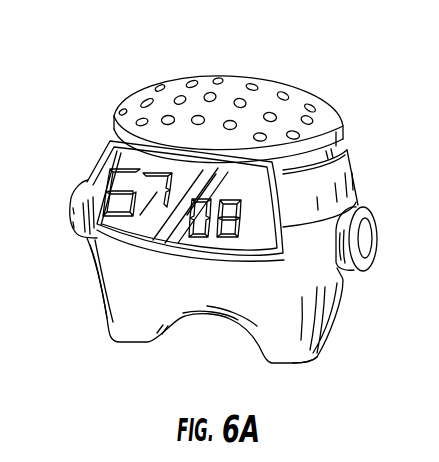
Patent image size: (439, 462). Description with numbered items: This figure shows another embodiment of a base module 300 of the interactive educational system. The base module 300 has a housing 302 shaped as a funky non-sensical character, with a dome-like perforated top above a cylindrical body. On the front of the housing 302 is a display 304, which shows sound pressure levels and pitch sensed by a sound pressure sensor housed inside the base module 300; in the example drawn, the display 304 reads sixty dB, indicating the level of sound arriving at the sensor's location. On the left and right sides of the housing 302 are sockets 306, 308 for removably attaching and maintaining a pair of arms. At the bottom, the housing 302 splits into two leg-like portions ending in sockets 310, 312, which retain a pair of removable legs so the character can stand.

The base module 300 is at (332, 92).
The housing 302 is at (145, 102).
The display 304 is at (115, 224).
The socket 306 is at (70, 207).
The socket 308 is at (363, 240).
The socket 310 is at (137, 342).
The socket 312 is at (290, 363).